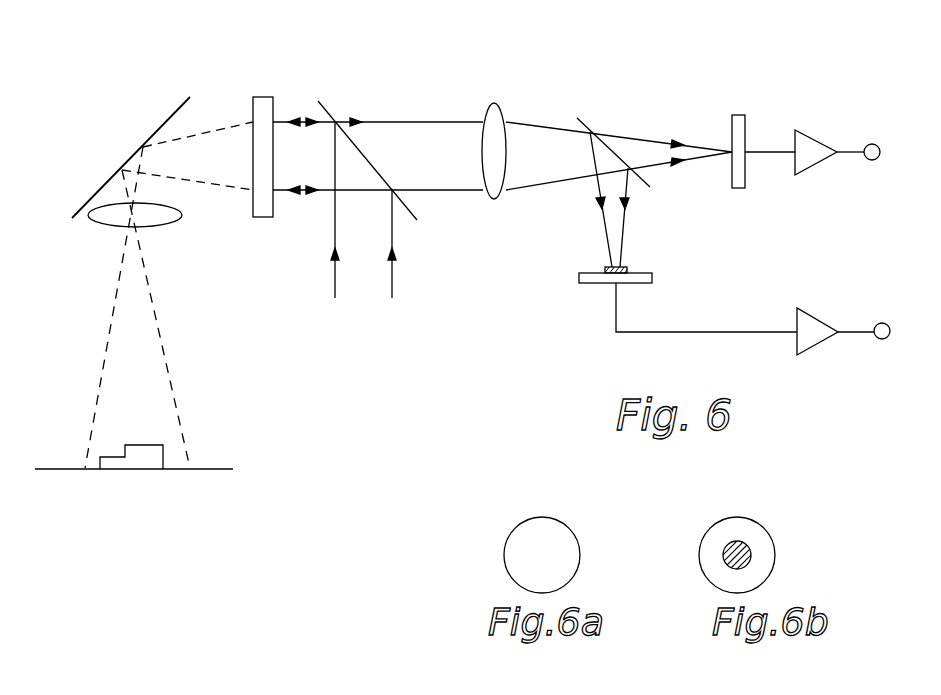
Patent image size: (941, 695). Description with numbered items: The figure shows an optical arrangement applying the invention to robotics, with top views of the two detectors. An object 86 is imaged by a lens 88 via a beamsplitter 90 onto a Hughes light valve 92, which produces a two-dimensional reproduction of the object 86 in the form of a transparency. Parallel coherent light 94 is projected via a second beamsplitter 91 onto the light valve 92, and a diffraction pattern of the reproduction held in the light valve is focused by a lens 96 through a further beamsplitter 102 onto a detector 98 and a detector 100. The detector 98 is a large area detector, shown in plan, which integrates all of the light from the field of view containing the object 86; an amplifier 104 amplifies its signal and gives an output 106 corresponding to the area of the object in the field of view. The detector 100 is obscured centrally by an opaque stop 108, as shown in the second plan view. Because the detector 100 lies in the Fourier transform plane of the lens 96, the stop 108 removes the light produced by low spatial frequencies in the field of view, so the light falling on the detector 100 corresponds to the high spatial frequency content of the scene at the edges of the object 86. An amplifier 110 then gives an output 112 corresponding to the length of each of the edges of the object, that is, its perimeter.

The object 86 is at (144, 445).
The lens 88 is at (165, 216).
The beamsplitter 90 is at (177, 109).
The beamsplitter 91 is at (353, 142).
The Hughes light valve 92 is at (267, 107).
The parallel coherent light 94 is at (393, 276).
The lens 96 is at (494, 115).
The detector 98 is at (739, 115).
The detector 100 is at (585, 283).
The beamsplitter 102 is at (608, 147).
The amplifier 104 is at (805, 139).
The output 106 is at (876, 143).
The opaque stop 108 is at (603, 268).
The amplifier 110 is at (805, 325).
The output 112 is at (885, 323).